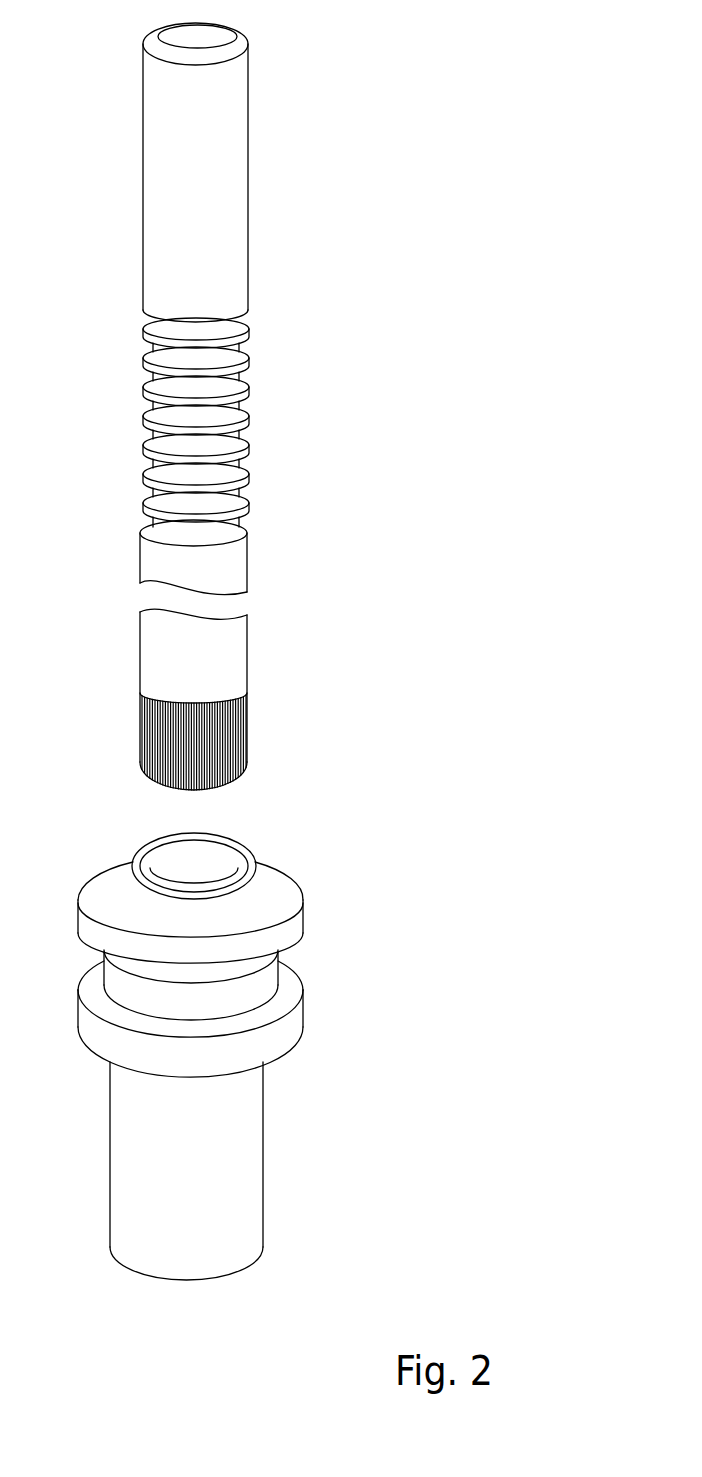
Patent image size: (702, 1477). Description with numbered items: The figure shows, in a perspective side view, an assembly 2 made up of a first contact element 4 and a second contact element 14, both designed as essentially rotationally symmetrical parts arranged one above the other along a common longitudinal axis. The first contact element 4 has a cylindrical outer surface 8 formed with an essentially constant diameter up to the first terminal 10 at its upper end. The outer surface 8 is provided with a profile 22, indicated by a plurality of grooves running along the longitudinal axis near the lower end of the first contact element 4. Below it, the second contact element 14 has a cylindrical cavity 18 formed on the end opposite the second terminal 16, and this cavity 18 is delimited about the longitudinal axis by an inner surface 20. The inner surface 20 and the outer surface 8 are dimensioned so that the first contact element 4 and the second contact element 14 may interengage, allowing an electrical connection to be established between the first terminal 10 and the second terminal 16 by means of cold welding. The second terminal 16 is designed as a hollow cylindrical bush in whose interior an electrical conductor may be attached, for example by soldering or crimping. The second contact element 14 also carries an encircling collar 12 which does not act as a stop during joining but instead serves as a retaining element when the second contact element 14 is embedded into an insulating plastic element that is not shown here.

The assembly 2 is at (312, 1053).
The first contact element 4 is at (256, 406).
The cylindrical outer surface 8 is at (178, 760).
The first terminal 10 is at (223, 173).
The encircling collar 12 is at (270, 1037).
The second contact element 14 is at (266, 1217).
The second terminal 16 is at (163, 1295).
The cylindrical cavity 18 is at (208, 877).
The inner surface 20 is at (163, 842).
The profile 22 is at (220, 738).